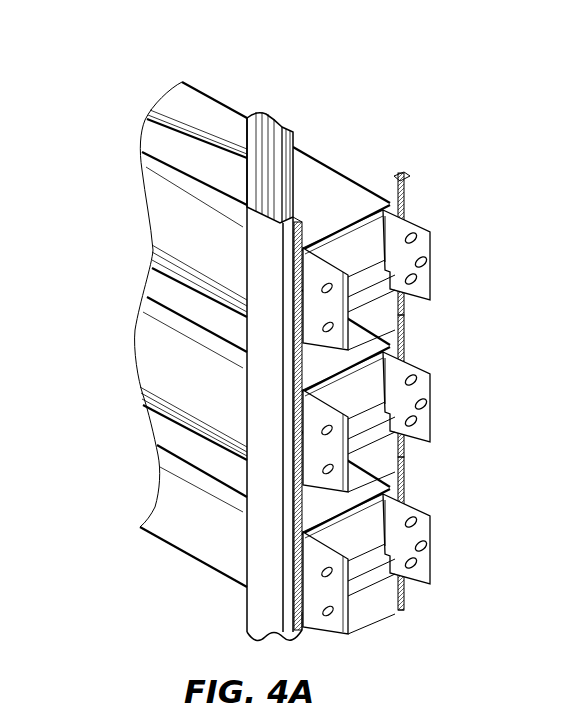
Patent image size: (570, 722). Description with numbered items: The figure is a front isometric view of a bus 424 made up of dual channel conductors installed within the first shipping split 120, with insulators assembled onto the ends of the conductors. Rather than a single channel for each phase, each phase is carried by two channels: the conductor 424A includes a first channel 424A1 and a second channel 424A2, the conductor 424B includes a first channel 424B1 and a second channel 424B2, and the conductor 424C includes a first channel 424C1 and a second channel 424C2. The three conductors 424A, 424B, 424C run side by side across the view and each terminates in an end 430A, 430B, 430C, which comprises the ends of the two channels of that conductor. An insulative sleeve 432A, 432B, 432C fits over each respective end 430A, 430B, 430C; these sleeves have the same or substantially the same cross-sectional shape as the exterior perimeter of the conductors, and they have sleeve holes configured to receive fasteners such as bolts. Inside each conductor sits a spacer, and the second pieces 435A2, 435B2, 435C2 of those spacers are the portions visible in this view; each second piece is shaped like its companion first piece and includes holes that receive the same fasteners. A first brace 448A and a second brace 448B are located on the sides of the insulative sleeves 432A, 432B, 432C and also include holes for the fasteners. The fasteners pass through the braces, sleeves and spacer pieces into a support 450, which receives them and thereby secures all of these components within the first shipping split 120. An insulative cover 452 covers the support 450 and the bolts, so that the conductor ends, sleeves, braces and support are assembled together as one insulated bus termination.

The first shipping split 120 is at (440, 76).
The bus 424 is at (228, 70).
The conductor 424A is at (244, 104).
The first channel 424A1 is at (170, 148).
The second channel 424A2 is at (298, 150).
The conductor 424B is at (134, 282).
The first channel 424B1 is at (147, 344).
The second channel 424B2 is at (409, 368).
The conductor 424C is at (136, 424).
The first channel 424C1 is at (170, 515).
The second channel 424C2 is at (430, 533).
The end 430A is at (448, 280).
The end 430B is at (450, 393).
The end 430C is at (450, 573).
The insulative sleeve 432A is at (354, 173).
The insulative sleeve 432B is at (392, 330).
The insulative sleeve 432C is at (397, 479).
The second piece 435A2 is at (375, 242).
The second piece 435B2 is at (355, 418).
The second piece 435C2 is at (364, 560).
The first brace 448A is at (302, 626).
The second brace 448B is at (392, 183).
The support 450 is at (285, 126).
The insulative cover 452 is at (247, 618).